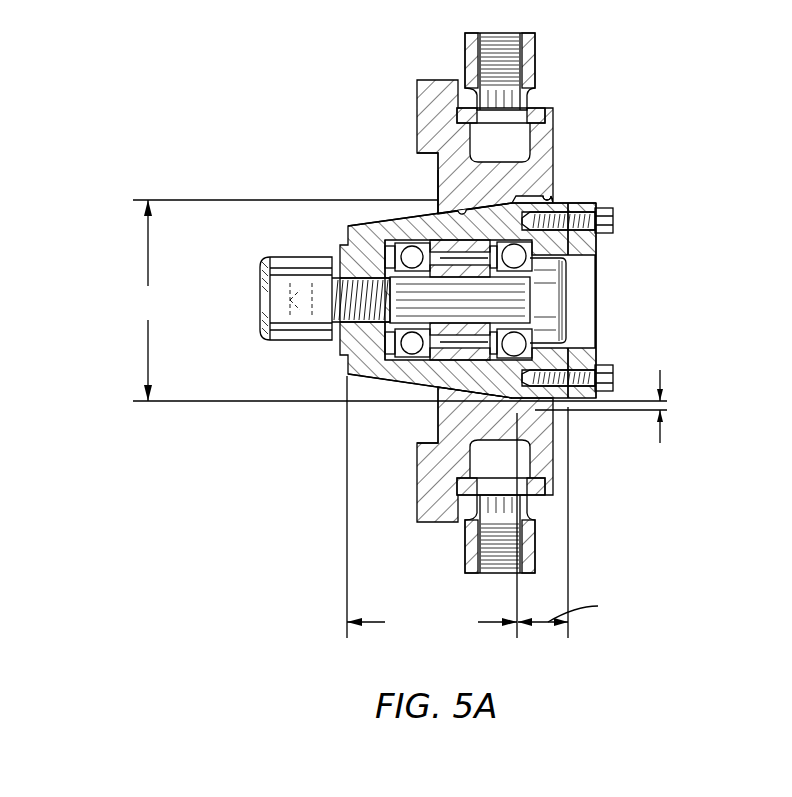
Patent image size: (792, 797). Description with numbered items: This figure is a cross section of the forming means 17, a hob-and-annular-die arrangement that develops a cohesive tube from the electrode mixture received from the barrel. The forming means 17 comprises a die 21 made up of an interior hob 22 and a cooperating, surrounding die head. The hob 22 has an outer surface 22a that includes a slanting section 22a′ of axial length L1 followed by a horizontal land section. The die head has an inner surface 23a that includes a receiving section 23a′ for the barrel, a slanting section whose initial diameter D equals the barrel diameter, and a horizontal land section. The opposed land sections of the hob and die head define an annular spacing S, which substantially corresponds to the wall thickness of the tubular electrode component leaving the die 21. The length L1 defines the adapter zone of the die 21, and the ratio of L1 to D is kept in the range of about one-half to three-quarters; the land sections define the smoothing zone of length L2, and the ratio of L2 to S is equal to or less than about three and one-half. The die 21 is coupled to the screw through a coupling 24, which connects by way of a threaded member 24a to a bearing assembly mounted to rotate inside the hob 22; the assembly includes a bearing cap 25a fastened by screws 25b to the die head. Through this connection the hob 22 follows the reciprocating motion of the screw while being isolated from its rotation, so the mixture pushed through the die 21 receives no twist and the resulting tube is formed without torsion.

The forming means 17 is at (627, 106).
The die 21 is at (553, 140).
The hob member 22 is at (566, 204).
The outer surface of the hob 22a is at (350, 233).
The slanting section of the hob outer surface 22a′ is at (364, 228).
The inner surface of the die head 23a is at (418, 156).
The receiving section of the die head inner surface 23a′ is at (438, 168).
The coupling 24 is at (260, 300).
The threaded member 24a is at (332, 320).
The bearing cap 25a is at (585, 292).
The screws 25b is at (613, 220).
The initial diameter D is at (400, 300).
The annular spacing S is at (665, 405).
The length of the slanting section L1 is at (432, 511).
The length of the land section L2 is at (615, 522).